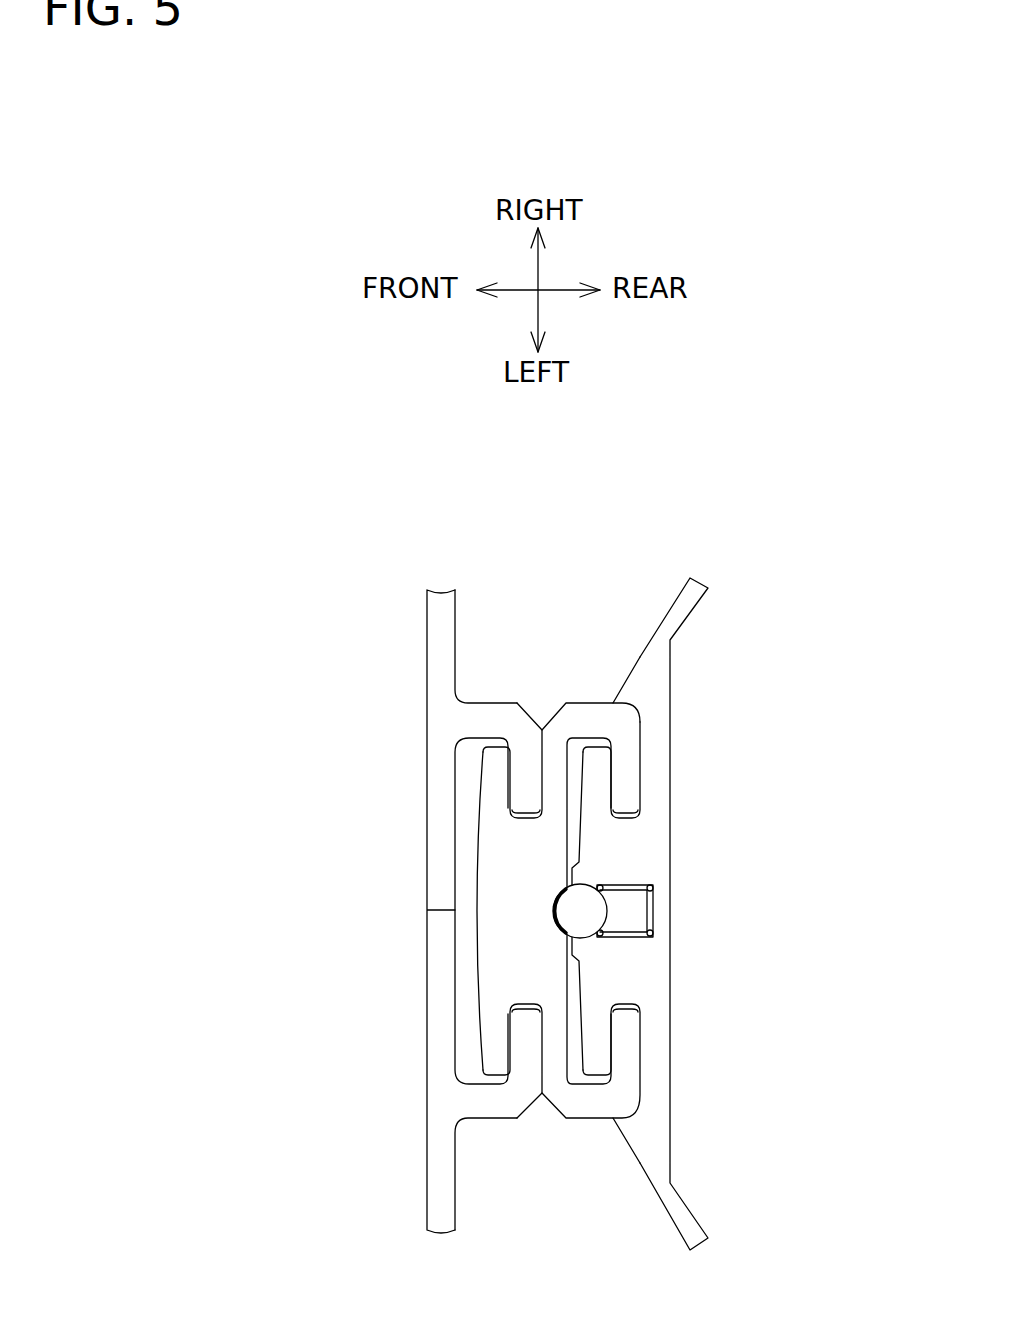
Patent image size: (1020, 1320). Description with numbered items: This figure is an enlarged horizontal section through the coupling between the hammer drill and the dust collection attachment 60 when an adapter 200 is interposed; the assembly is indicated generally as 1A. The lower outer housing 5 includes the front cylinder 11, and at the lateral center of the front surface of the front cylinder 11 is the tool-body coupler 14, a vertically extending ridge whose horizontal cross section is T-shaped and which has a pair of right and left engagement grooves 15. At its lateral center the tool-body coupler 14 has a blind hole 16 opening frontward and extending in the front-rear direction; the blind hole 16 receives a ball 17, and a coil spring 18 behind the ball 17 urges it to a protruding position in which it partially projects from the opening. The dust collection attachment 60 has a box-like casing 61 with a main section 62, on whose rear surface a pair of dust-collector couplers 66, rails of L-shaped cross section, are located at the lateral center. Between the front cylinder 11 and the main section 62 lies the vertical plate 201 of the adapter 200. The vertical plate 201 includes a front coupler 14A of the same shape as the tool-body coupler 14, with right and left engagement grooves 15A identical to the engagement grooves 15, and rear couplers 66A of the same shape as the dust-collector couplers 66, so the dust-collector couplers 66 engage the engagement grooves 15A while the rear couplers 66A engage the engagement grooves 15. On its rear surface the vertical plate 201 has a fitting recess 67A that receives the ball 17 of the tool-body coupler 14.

The fixing structure 1A is at (638, 520).
The lower outer housing 5 is at (722, 877).
The front cylinder 11 is at (692, 587).
The tool-body coupler 14 is at (652, 850).
The front coupler 14A is at (497, 895).
The engagement groove 15 is at (625, 822).
The engagement groove 15A is at (522, 824).
The blind hole 16 is at (650, 912).
The ball 17 is at (555, 898).
The coil spring 18 is at (602, 937).
The dust collection attachment 60 is at (408, 555).
The casing 61 is at (473, 866).
The main section 62 is at (442, 600).
The dust-collector coupler 66 is at (523, 770).
The rear coupler 66A is at (625, 778).
The fitting recess 67A is at (553, 918).
The adapter 200 is at (577, 670).
The vertical plate 201 is at (555, 763).